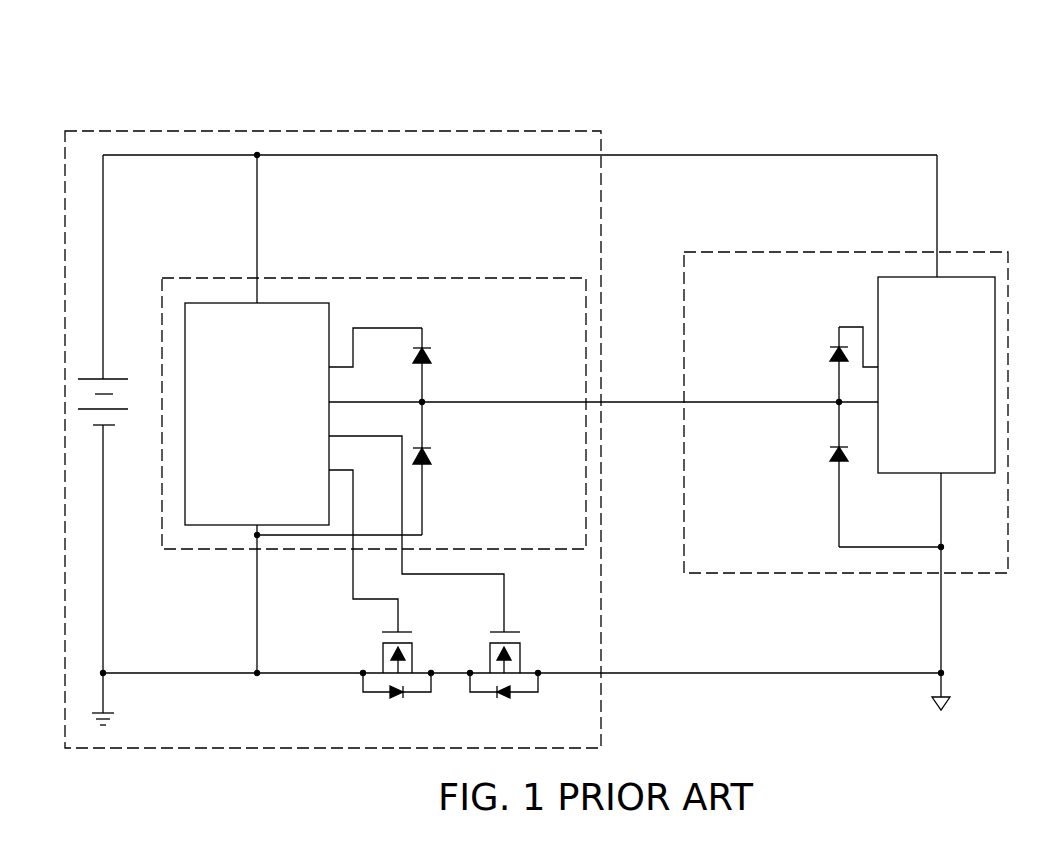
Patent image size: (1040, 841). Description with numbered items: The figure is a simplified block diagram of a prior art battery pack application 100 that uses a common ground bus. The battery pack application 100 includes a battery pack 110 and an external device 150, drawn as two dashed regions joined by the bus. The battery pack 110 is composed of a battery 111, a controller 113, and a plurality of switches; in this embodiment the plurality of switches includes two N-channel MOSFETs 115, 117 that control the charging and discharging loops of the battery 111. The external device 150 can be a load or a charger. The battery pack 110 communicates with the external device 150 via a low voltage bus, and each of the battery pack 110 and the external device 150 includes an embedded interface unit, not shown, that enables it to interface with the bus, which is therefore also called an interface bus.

The battery pack application 100 is at (119, 98).
The battery pack 110 is at (516, 131).
The battery 111 is at (110, 379).
The controller 113 is at (521, 278).
The N-channel MOSFET 115 is at (404, 632).
The N-channel MOSFET 117 is at (518, 630).
The external device 150 is at (958, 252).